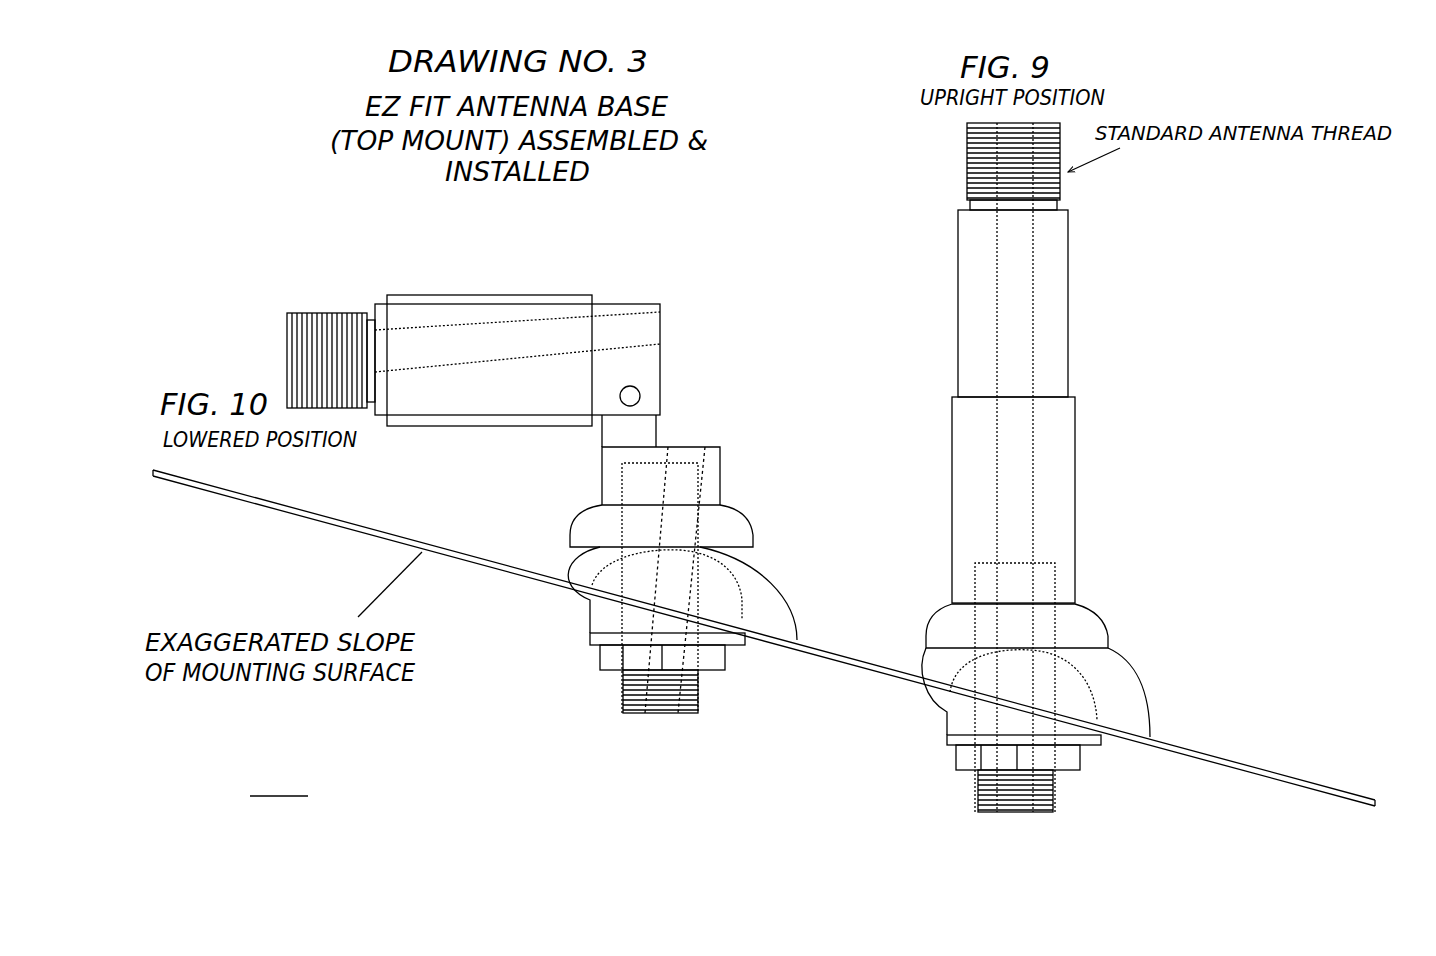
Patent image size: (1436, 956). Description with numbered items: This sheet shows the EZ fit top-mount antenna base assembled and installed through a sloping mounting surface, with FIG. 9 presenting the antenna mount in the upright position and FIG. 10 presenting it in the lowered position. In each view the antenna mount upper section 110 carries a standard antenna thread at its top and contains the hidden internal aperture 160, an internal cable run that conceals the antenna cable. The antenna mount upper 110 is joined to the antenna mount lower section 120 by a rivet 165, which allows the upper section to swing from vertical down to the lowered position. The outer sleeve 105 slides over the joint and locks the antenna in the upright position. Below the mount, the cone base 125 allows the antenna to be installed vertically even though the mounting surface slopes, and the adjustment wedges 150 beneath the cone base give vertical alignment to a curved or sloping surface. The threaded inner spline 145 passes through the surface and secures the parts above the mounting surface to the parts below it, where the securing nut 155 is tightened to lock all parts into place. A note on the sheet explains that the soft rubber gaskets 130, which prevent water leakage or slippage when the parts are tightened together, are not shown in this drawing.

In FIG. 10, the outer sleeve 105 is at (445, 290).
In FIG. 9, the outer sleeve 105 is at (1078, 495).
In FIG. 10, the antenna mount upper section 110 is at (688, 258).
In FIG. 9, the antenna mount upper section 110 is at (1192, 245).
In FIG. 10, the antenna mount lower section 120 is at (565, 518).
In FIG. 9, the antenna mount lower section 120 is at (1190, 583).
In FIG. 10, the cone base 125 is at (755, 603).
In FIG. 9, the cone base 125 is at (1157, 713).
In FIG. 10, the soft rubber gaskets 130 is at (281, 838).
In FIG. 9, the threaded inner spline 145 is at (970, 806).
In FIG. 9, the adjustment wedges 150 is at (950, 745).
In FIG. 9, the securing nut 155 is at (1070, 775).
In FIG. 9, the hidden internal aperture 160 is at (1015, 383).
In FIG. 10, the rivet 165 is at (641, 397).